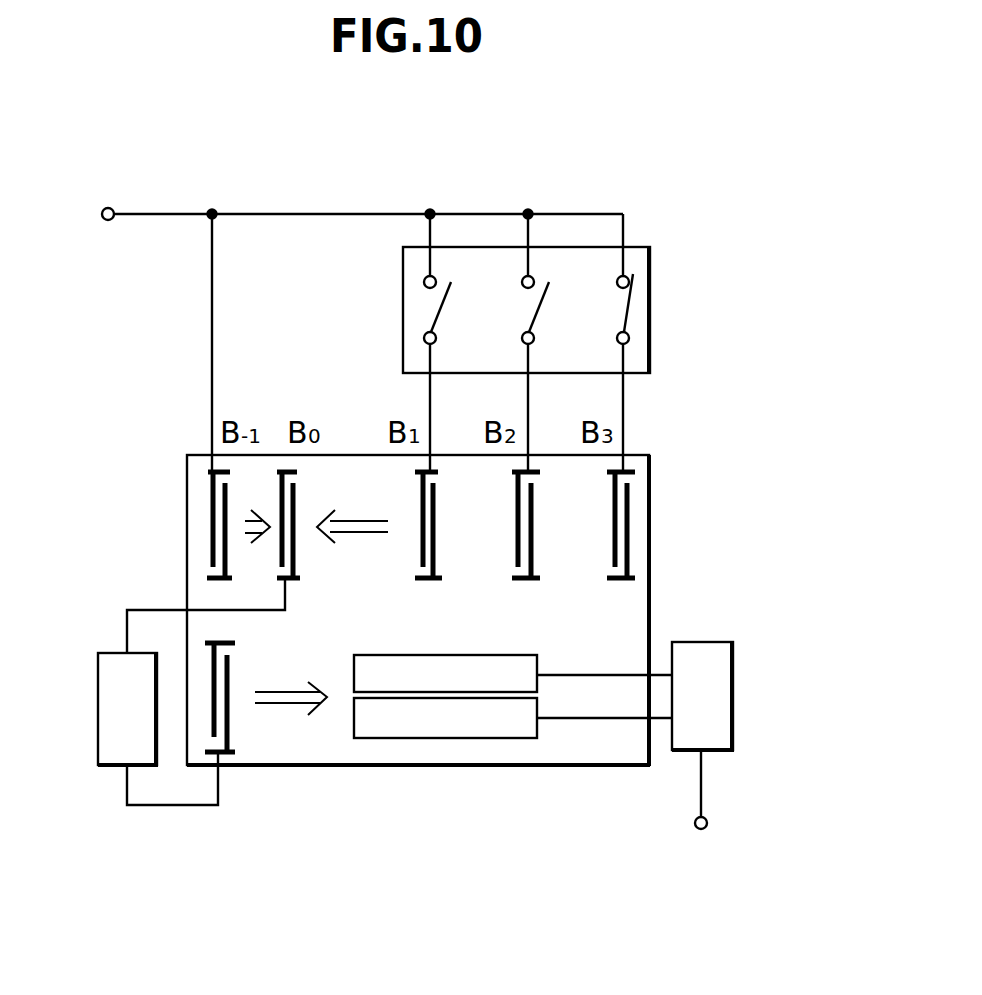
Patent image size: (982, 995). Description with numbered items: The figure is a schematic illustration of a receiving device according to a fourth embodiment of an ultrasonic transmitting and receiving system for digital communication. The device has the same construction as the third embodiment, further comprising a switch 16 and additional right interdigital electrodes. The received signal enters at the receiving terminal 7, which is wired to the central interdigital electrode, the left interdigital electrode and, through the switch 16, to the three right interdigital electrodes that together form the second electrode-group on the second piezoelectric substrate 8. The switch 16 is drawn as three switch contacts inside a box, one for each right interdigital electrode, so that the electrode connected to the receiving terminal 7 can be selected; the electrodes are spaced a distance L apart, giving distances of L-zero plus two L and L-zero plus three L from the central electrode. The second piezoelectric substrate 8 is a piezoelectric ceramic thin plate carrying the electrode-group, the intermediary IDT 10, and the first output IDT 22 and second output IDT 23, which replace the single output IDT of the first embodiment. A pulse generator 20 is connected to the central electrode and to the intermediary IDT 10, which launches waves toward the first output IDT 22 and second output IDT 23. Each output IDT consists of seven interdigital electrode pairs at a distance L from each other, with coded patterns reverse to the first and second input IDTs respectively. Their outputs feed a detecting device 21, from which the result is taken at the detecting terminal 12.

The receiving terminal 7 is at (155, 153).
The switch 16 is at (642, 290).
The second piezoelectric substrate 8 is at (640, 535).
The pulse generator 20 is at (57, 838).
The intermediary IDT 10 is at (228, 722).
The first output IDT 22 is at (502, 840).
The second output IDT 23 is at (560, 888).
The detecting device 21 is at (755, 773).
The detecting terminal 12 is at (761, 857).